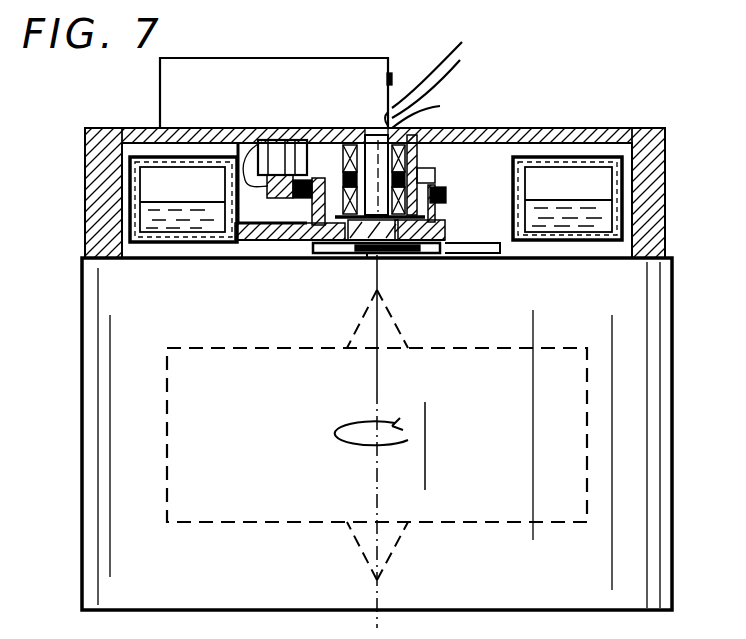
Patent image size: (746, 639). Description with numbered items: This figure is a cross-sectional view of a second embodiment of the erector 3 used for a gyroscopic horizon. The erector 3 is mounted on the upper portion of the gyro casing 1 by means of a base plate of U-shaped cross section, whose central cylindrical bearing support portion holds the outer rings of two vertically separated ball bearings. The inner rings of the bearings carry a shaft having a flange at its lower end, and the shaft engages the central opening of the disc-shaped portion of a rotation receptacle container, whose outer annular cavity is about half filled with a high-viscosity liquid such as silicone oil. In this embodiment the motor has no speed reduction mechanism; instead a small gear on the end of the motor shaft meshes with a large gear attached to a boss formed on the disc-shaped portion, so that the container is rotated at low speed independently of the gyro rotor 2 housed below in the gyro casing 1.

The gyro casing 1 is at (82, 465).
The gyro rotor 2 is at (167, 467).
The erector 3 is at (536, 92).